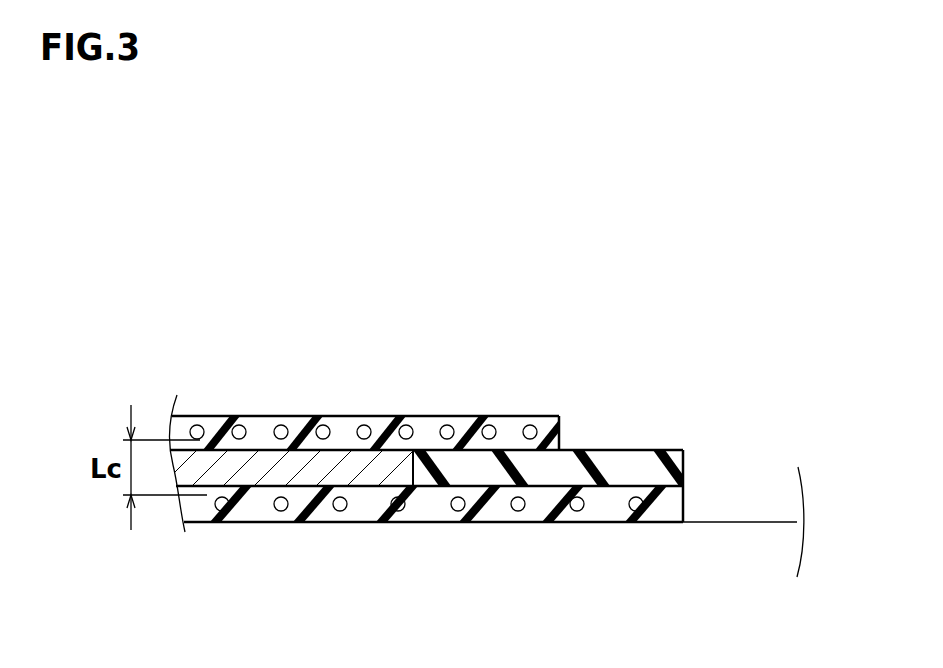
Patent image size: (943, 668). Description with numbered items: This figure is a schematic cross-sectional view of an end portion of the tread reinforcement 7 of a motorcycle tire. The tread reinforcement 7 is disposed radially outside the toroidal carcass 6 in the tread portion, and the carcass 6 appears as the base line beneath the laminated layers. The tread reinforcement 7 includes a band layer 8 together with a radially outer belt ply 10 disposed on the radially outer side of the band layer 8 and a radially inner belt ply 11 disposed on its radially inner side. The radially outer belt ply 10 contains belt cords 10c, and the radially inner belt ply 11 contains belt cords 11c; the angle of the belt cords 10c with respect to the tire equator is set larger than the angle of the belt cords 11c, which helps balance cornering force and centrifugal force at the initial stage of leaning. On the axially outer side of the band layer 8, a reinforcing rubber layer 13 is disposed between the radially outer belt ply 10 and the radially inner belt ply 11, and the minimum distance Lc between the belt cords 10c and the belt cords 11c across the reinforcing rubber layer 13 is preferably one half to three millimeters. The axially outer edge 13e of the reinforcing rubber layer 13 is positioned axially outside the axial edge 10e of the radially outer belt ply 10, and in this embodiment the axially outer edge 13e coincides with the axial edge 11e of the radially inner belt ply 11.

The toroidal carcass 6 is at (742, 521).
The tread reinforcement 7 is at (470, 432).
The band layer 8 is at (383, 470).
The radially outer belt ply 10 is at (426, 374).
The belt cords of the radially outer belt ply 10c is at (449, 432).
The axial edge of the radially outer belt ply 10e is at (560, 432).
The radially inner belt ply 11 is at (458, 561).
The belt cords of the radially inner belt ply 11c is at (518, 506).
The axial edge of the radially inner belt ply 11e is at (683, 500).
The reinforcing rubber layer 13 is at (596, 410).
The axially outer edge of the reinforcing rubber layer 13e is at (683, 467).